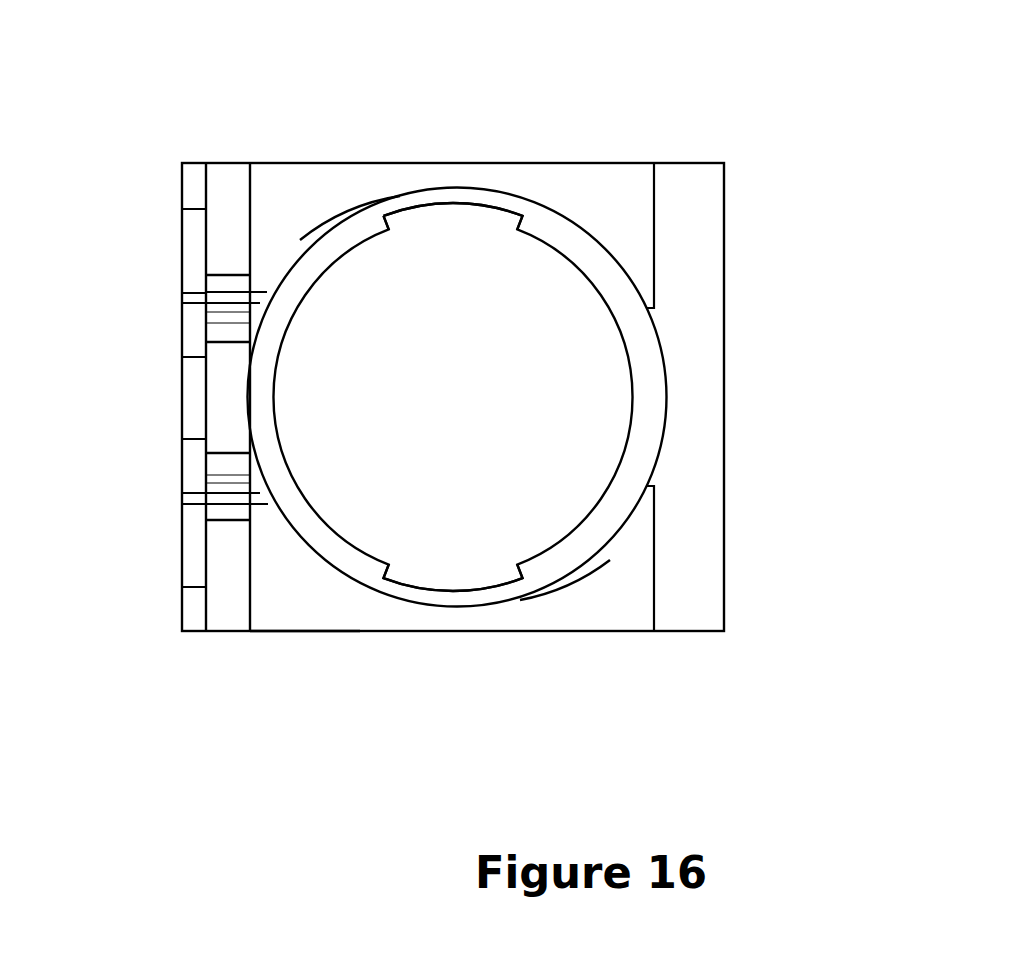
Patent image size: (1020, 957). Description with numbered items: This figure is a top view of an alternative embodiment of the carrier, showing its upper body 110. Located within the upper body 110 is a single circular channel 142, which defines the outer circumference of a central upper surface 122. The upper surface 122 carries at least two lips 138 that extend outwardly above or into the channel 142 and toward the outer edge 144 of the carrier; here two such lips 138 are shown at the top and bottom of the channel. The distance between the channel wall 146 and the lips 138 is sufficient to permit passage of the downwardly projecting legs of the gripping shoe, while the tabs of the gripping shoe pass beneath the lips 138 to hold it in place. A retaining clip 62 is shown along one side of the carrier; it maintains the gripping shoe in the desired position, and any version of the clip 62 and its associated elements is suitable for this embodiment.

The upper body 110 is at (623, 183).
The retaining clip 62 is at (227, 401).
The circular channel 142 is at (328, 238).
The channel wall 146 is at (363, 207).
The upper surface 122 is at (547, 440).
The lips 138 is at (497, 217).
The outer edge 144 is at (295, 632).